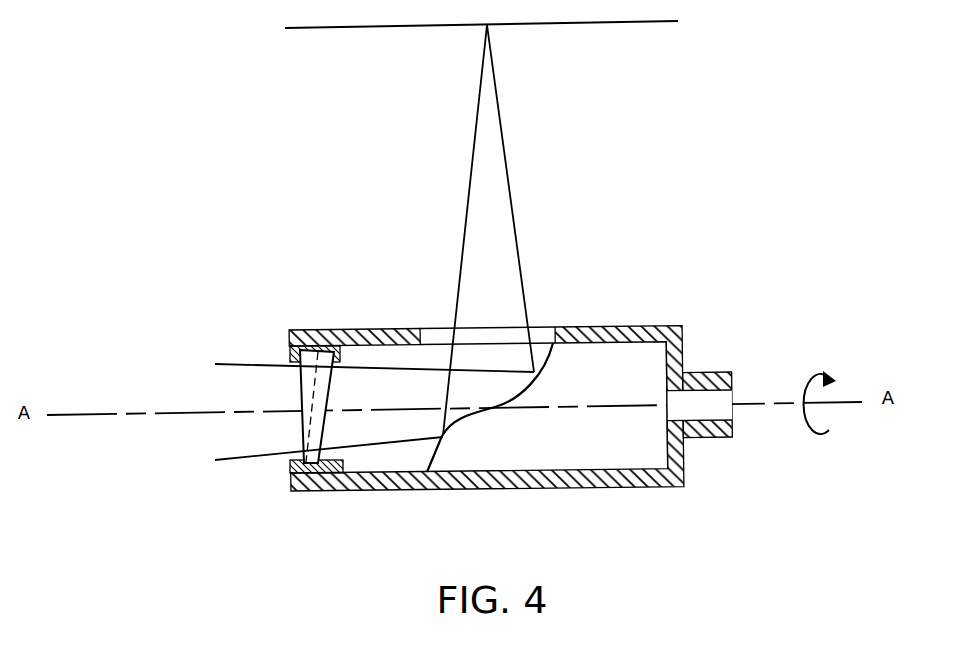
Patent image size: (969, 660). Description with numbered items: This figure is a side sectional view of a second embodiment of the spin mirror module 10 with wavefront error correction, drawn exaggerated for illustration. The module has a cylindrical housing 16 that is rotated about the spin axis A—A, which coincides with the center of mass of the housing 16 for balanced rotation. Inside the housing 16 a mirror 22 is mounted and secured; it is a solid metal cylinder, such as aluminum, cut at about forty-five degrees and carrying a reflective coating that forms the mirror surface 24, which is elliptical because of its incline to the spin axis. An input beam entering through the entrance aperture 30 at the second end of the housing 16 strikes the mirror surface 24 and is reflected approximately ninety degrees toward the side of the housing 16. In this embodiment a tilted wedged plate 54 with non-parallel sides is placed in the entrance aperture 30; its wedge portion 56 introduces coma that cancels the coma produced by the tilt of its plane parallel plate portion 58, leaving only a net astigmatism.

The spin mirror module 10 is at (651, 256).
The cylindrical housing 16 is at (616, 490).
The mirror 22 is at (523, 450).
The mirror surface 24 is at (460, 425).
The entrance aperture 30 is at (288, 437).
The tilted wedged plate 54 is at (299, 368).
The wedge portion 56 is at (310, 379).
The plane parallel plate portion 58 is at (335, 379).